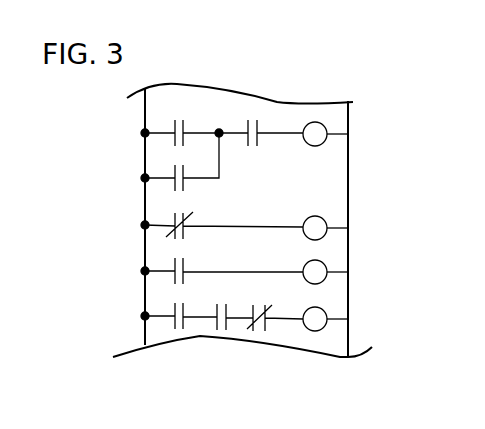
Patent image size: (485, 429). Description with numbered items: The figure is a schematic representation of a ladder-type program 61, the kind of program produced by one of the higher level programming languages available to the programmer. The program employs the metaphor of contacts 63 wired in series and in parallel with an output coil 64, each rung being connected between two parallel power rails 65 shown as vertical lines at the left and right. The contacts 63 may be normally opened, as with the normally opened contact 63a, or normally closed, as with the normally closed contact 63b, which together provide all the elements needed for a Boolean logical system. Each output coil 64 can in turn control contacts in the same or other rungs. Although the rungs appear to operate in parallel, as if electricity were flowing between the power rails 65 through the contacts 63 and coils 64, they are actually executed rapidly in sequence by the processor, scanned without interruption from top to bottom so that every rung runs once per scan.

The ladder-type program 61 is at (336, 91).
The contacts 63 is at (175, 121).
The normally opened contact 63a is at (175, 186).
The normally closed contact 63b is at (173, 238).
The output coil 64 is at (305, 125).
The power rails 65 is at (144, 305).